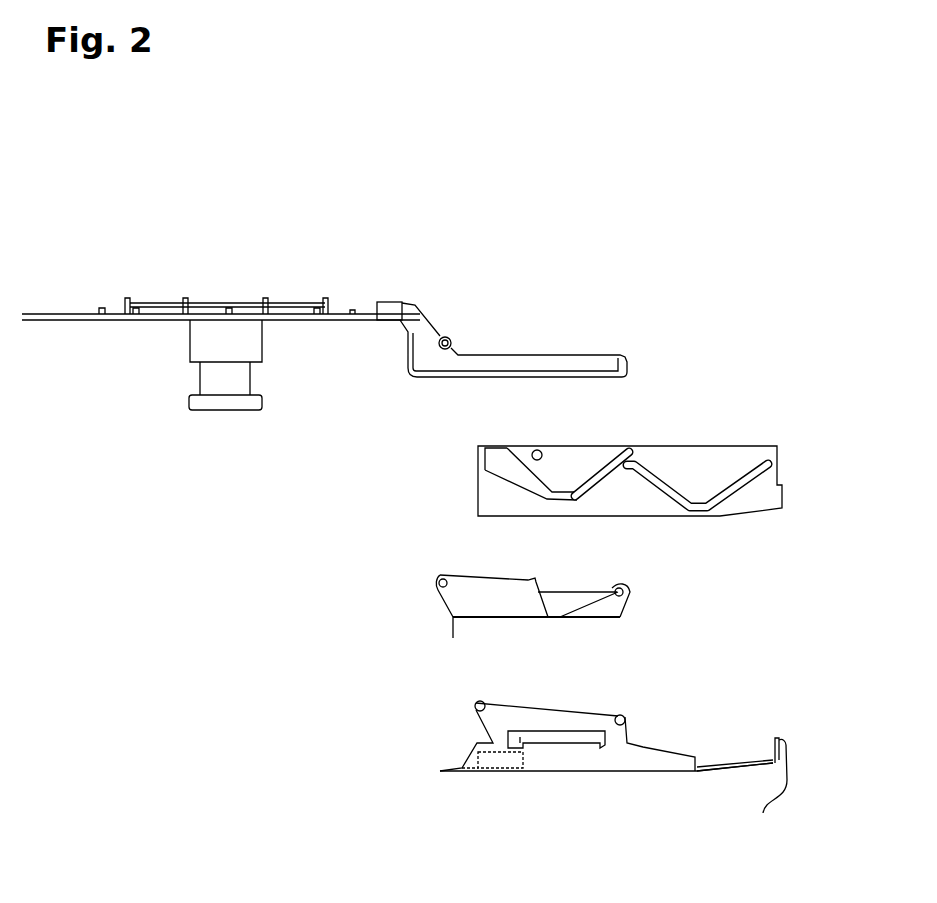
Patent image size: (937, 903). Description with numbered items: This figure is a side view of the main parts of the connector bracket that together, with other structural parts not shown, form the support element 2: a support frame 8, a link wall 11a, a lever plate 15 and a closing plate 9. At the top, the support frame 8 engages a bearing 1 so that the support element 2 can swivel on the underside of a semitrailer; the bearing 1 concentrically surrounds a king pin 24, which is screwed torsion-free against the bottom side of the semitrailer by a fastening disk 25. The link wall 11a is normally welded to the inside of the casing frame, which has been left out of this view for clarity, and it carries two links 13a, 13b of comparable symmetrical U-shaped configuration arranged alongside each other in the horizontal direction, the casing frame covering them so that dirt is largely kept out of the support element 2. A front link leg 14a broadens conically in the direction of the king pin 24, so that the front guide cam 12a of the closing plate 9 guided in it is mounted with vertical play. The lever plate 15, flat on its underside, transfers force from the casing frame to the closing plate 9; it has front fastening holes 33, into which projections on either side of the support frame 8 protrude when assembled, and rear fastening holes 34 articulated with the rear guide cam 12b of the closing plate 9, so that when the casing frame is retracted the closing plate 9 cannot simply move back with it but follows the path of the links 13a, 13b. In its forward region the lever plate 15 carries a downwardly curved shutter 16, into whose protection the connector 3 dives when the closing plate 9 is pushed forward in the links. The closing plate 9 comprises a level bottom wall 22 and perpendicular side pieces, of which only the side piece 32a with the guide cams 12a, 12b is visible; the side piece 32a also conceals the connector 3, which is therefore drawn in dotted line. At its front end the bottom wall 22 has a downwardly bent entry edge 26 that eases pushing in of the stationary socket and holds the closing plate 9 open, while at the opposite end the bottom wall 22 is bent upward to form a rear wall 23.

The bearing 1 is at (103, 308).
The support element 2 is at (258, 597).
The connector 3 is at (503, 769).
The support frame 8 is at (440, 340).
The closing plate 9 is at (562, 781).
The link wall 11a is at (589, 482).
The front guide cam 12a is at (478, 704).
The rear guide cam 12b is at (626, 721).
The link 13a is at (559, 491).
The link 13b is at (713, 508).
The front link leg 14a is at (500, 468).
The lever plate 15 is at (528, 619).
The shutter 16 is at (498, 583).
The bottom wall 22 is at (588, 772).
The rear wall 23 is at (769, 788).
The king pin 24 is at (213, 378).
The fastening disk 25 is at (280, 303).
The entry edge 26 is at (440, 769).
The side piece 32a is at (542, 725).
The front fastening hole 33 is at (442, 579).
The rear fastening hole 34 is at (617, 591).